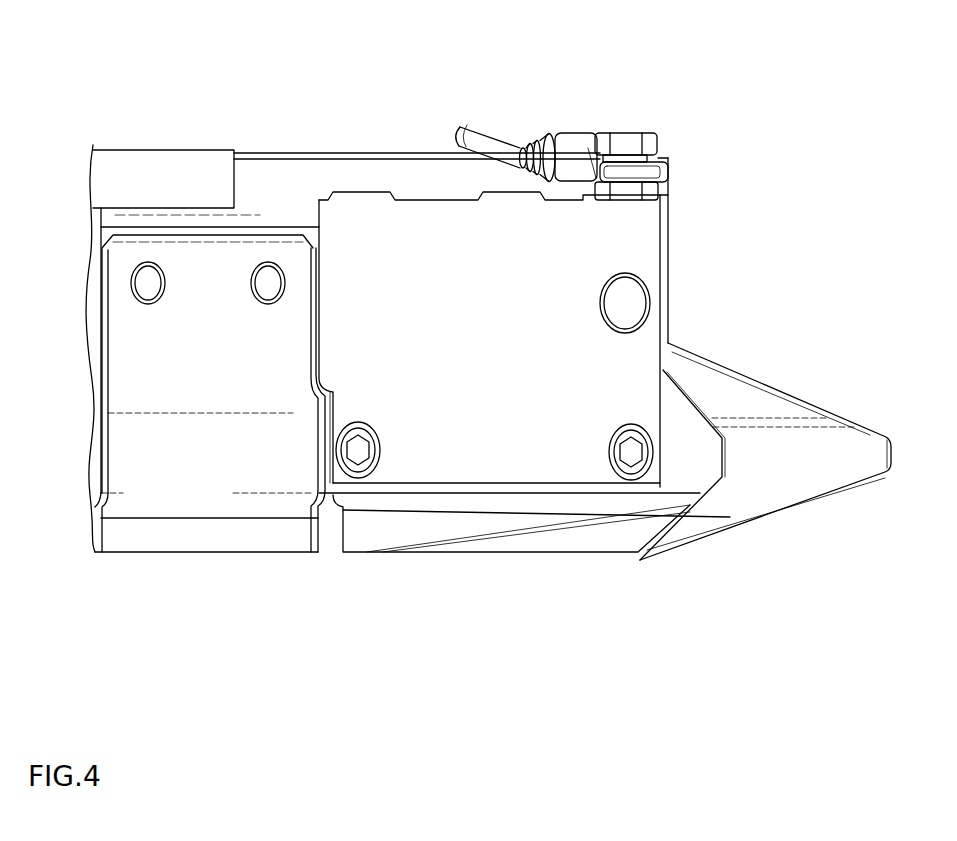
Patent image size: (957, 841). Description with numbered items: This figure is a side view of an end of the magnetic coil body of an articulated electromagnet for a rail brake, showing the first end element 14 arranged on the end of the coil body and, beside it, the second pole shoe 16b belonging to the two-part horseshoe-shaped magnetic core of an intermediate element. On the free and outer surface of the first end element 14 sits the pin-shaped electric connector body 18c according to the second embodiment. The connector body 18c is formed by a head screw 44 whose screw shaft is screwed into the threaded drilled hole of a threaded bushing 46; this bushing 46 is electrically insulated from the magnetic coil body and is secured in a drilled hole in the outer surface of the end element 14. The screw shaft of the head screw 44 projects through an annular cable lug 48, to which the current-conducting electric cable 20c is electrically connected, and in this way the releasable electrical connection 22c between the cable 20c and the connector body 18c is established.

The first end element 14 is at (518, 460).
The second pole shoe 16b is at (207, 540).
The pin-shaped electric connector body 18c is at (597, 125).
The current-conducting electric cable 20c is at (474, 136).
The releasable electrical connection 22c is at (625, 114).
The head screw 44 is at (620, 143).
The threaded bushing 46 is at (650, 192).
The annular cable lug 48 is at (653, 172).